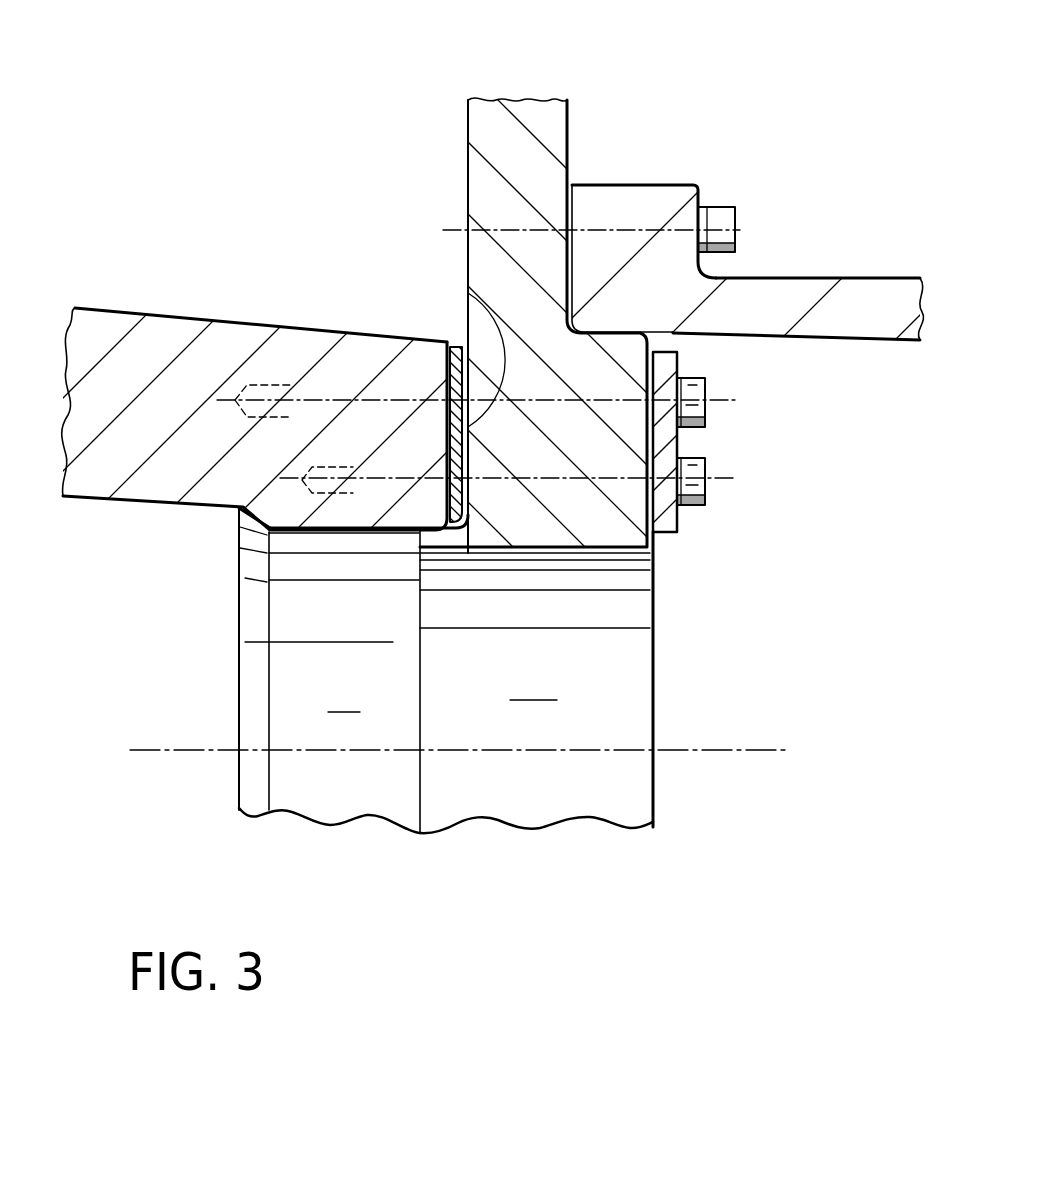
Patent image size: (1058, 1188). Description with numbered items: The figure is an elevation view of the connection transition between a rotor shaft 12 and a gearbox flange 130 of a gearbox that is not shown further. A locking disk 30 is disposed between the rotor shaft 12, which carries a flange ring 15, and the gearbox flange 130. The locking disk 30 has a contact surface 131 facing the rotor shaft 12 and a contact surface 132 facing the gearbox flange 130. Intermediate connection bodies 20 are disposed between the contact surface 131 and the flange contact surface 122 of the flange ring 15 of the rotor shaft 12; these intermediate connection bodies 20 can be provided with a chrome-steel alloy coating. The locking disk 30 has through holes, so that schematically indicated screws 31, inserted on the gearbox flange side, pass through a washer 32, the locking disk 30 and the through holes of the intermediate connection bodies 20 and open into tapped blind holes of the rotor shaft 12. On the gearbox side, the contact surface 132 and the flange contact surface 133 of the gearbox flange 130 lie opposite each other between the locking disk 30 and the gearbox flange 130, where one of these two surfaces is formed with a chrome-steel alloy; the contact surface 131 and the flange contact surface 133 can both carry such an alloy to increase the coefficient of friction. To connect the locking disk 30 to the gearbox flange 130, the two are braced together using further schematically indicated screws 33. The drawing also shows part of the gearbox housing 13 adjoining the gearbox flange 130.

The rotor shaft 12 is at (147, 353).
The housing component 13 is at (784, 296).
The flange ring 15 is at (365, 400).
The intermediate connection bodies 20 is at (460, 346).
The locking disk 30 is at (505, 125).
The screws 31 is at (323, 397).
The washer 32 is at (663, 505).
The screws 33 is at (510, 230).
The flange contact surface 122 is at (398, 376).
The gearbox flange 130 is at (648, 214).
The contact surface 131 is at (466, 346).
The contact surface 132 is at (568, 222).
The flange contact surface 133 is at (574, 217).